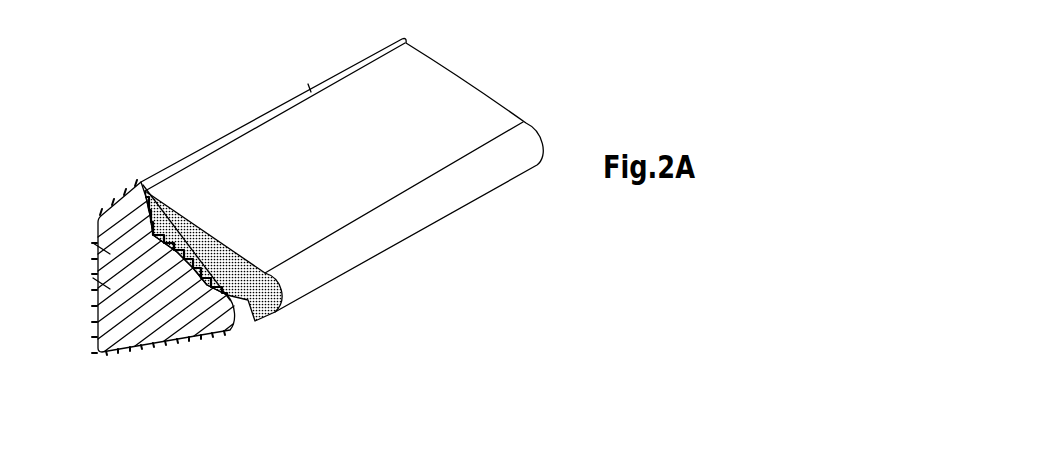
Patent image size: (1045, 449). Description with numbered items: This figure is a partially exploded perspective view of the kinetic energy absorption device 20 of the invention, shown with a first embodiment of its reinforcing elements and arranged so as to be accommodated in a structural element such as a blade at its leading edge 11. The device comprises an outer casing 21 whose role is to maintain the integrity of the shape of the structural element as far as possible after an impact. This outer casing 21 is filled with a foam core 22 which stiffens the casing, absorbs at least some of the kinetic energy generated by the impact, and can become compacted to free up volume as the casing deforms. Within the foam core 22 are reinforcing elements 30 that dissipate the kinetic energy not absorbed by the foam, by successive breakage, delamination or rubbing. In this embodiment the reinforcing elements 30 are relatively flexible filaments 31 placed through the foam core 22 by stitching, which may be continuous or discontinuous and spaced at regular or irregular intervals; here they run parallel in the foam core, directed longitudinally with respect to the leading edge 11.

The leading edge 11 is at (425, 227).
The kinetic energy absorption device 20 is at (248, 100).
The outer casing 21 is at (141, 182).
The foam core 22 is at (240, 302).
The reinforcing elements 30 is at (158, 355).
The filaments 31 is at (93, 278).